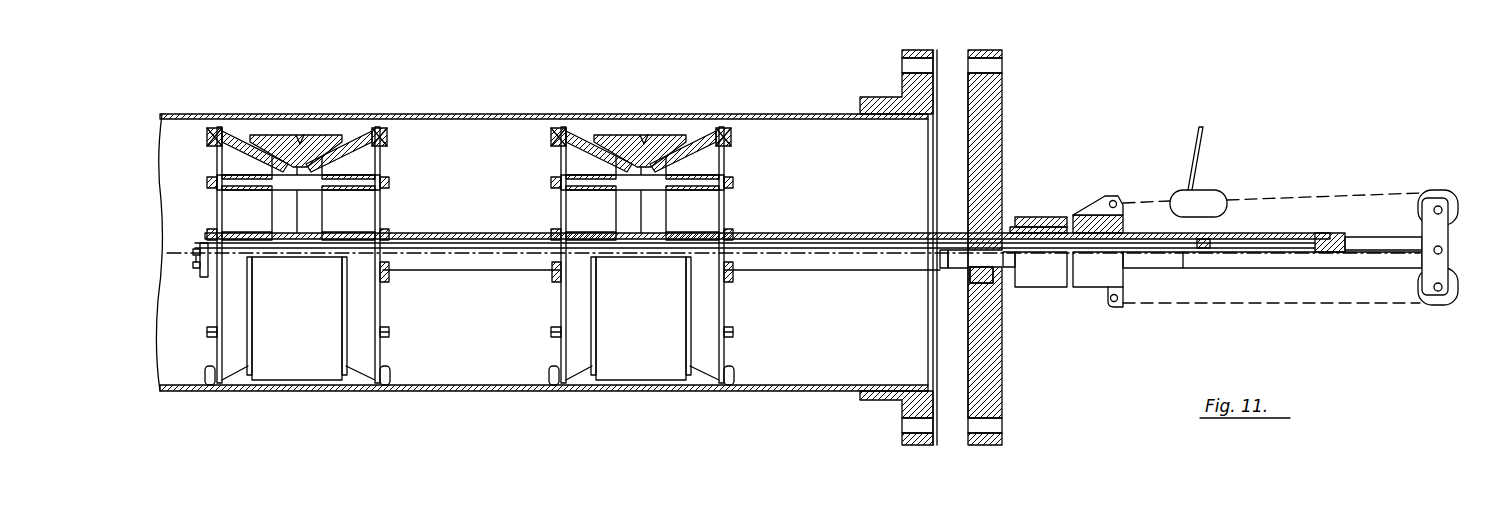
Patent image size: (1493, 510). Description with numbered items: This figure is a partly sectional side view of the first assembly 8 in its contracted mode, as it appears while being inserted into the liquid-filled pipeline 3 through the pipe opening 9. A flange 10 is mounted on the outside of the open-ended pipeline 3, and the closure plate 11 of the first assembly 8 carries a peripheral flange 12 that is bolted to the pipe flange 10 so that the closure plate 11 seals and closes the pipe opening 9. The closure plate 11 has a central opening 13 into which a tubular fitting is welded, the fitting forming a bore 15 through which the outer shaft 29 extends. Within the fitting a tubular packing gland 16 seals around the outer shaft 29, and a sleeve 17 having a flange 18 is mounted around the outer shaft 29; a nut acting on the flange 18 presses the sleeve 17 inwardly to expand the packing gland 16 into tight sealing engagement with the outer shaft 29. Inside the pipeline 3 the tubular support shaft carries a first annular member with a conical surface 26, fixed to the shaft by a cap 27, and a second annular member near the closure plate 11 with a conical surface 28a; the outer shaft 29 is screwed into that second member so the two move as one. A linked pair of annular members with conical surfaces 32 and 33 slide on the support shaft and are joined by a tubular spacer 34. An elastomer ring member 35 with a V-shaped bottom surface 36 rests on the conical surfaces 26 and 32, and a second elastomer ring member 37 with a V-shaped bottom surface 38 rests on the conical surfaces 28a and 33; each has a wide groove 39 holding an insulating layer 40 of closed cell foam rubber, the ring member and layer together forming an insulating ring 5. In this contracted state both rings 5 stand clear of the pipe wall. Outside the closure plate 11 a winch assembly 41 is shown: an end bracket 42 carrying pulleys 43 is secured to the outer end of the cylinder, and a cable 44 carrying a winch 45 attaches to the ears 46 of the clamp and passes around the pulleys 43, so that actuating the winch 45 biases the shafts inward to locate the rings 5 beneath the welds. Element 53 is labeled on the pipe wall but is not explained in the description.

The pipeline 3 is at (468, 392).
The insulating ring 5 is at (300, 335).
The first assembly 8 is at (853, 270).
The pipe opening 9 is at (938, 160).
The flange 10 is at (918, 50).
The closure plate 11 is at (1003, 130).
The peripheral flange 12 is at (990, 50).
The central opening 13 is at (972, 200).
The bore 15 is at (1000, 290).
The packing gland 16 is at (1013, 220).
The sleeve 17 is at (1125, 222).
The flange 18 is at (1050, 217).
The conical surface 26 is at (232, 128).
The cap 27 is at (212, 240).
The conical surface 28a is at (698, 120).
The outer shaft 29 is at (782, 232).
The conical surface 32 is at (355, 135).
The conical surface 33 is at (591, 120).
The tubular spacer 34 is at (452, 238).
The elastomer ring member 35 is at (297, 137).
The V-shaped bottom surface 36 is at (313, 167).
The elastomer ring member 37 is at (648, 150).
The V-shaped bottom surface 38 is at (657, 166).
The groove 39 is at (325, 137).
The insulating layer 40 is at (270, 135).
The winch assembly 41 is at (1258, 190).
The end bracket 42 is at (1448, 238).
The pulleys 43 is at (1447, 195).
The cable 44 is at (1365, 193).
The winch 45 is at (1205, 185).
The ears 46 is at (1113, 196).
The tube wall 53 is at (785, 113).